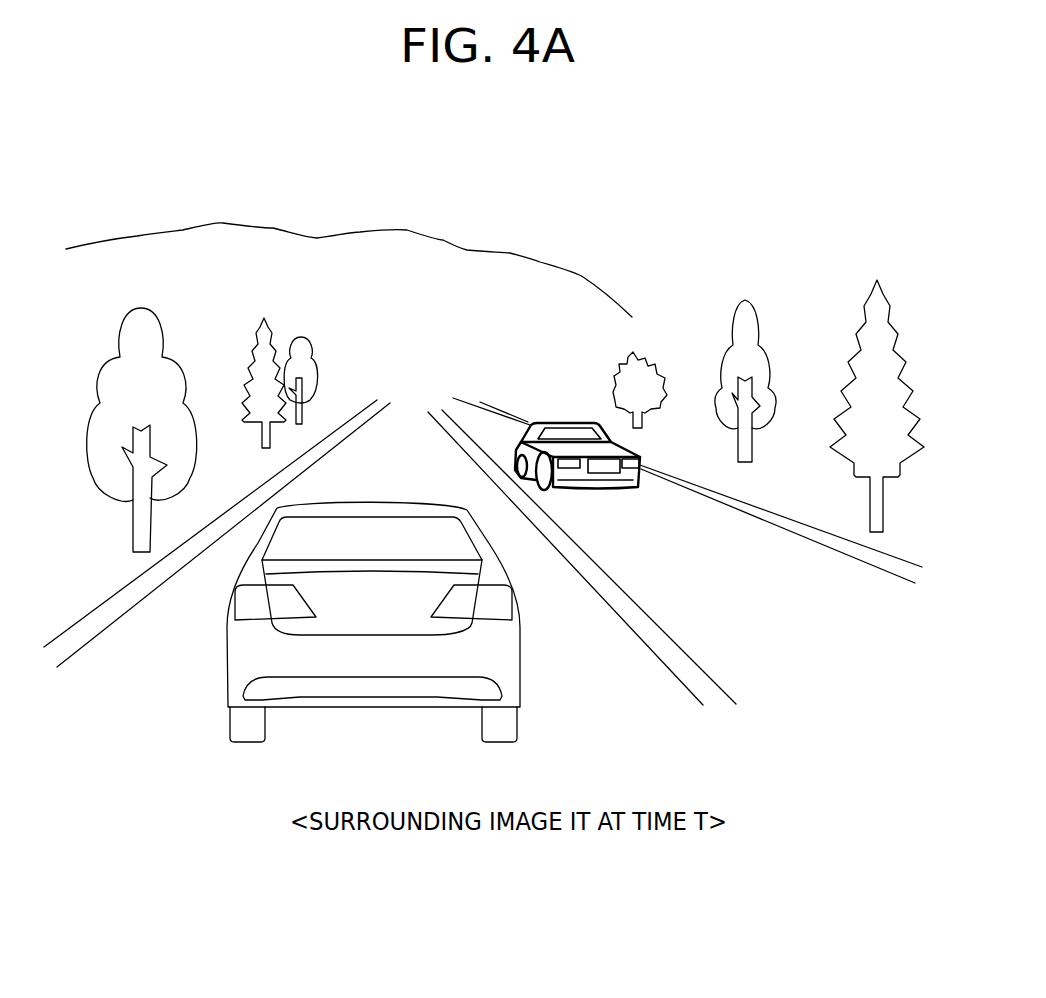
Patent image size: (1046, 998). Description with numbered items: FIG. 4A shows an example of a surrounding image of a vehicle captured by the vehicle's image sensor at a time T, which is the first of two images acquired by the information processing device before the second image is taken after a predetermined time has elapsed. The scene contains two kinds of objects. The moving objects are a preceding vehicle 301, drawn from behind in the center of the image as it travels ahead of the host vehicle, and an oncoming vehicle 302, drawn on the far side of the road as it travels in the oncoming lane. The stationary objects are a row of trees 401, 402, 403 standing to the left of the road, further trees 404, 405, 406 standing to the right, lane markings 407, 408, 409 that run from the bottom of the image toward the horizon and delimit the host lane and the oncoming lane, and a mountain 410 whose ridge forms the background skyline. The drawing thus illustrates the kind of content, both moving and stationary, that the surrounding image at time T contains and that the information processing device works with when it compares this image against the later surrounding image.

The preceding vehicle 301 is at (373, 599).
The oncoming vehicle 302 is at (592, 484).
The tree 401 is at (156, 407).
The tree 402 is at (295, 364).
The tree 403 is at (340, 373).
The tree 404 is at (667, 365).
The tree 405 is at (771, 359).
The tree 406 is at (895, 386).
The lane marking 407 is at (217, 544).
The lane marking 408 is at (605, 557).
The lane marking 409 is at (687, 511).
The mountain 410 is at (349, 268).